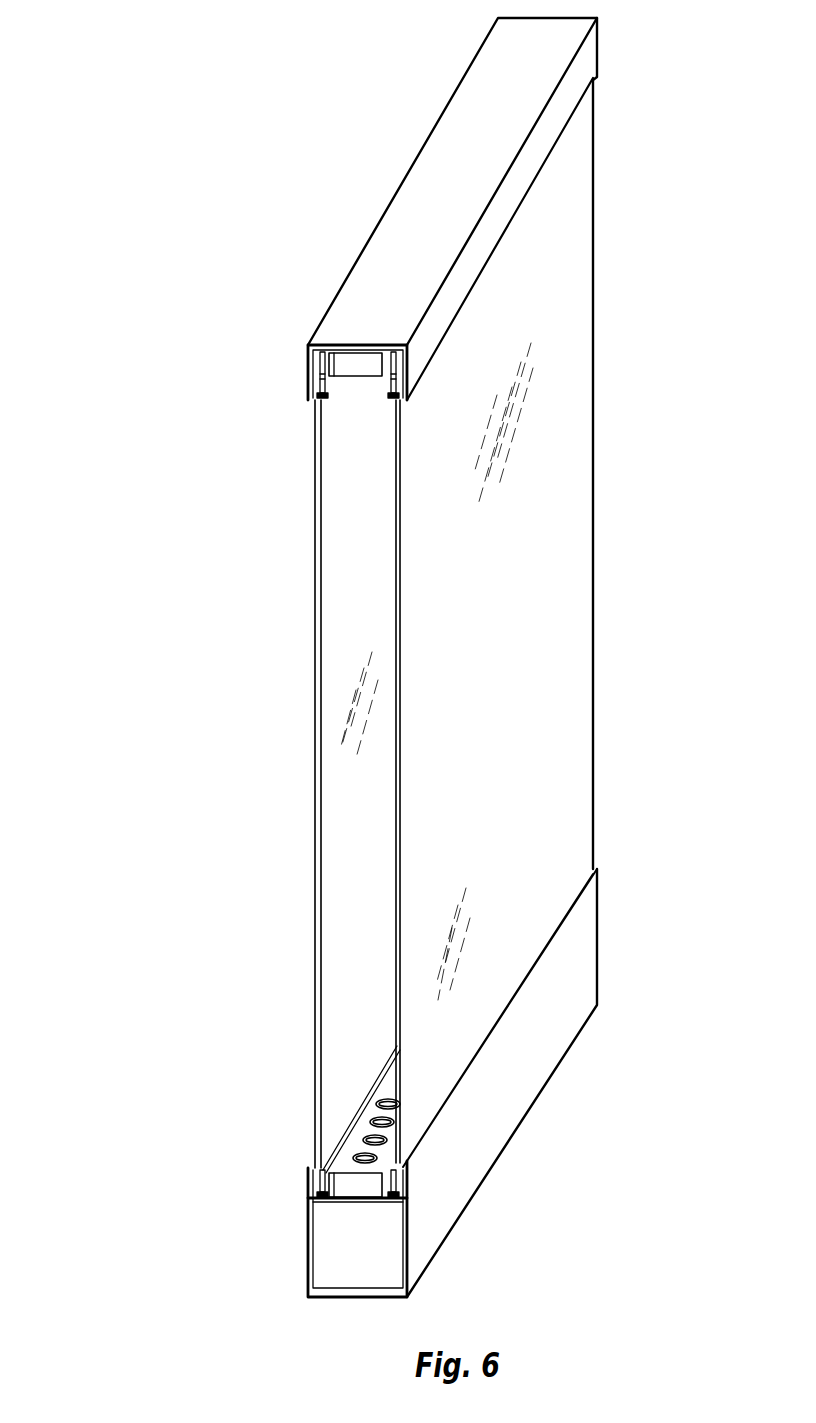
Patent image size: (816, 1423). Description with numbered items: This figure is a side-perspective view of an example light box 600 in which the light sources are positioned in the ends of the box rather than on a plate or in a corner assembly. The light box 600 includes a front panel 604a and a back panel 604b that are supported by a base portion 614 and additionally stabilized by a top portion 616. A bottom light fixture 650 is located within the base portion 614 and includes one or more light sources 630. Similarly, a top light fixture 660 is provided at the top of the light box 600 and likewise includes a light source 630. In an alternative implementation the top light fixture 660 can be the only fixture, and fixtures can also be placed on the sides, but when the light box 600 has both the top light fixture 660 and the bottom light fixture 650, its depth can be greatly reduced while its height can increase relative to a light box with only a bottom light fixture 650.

The light box 600 is at (146, 392).
The front panel 604a is at (541, 530).
The back panel 604b is at (315, 712).
The base portion 614 is at (540, 1035).
The top portion 616 is at (527, 72).
The light source 630 is at (353, 376).
The bottom light fixture 650 is at (352, 1185).
The top light fixture 660 is at (356, 366).